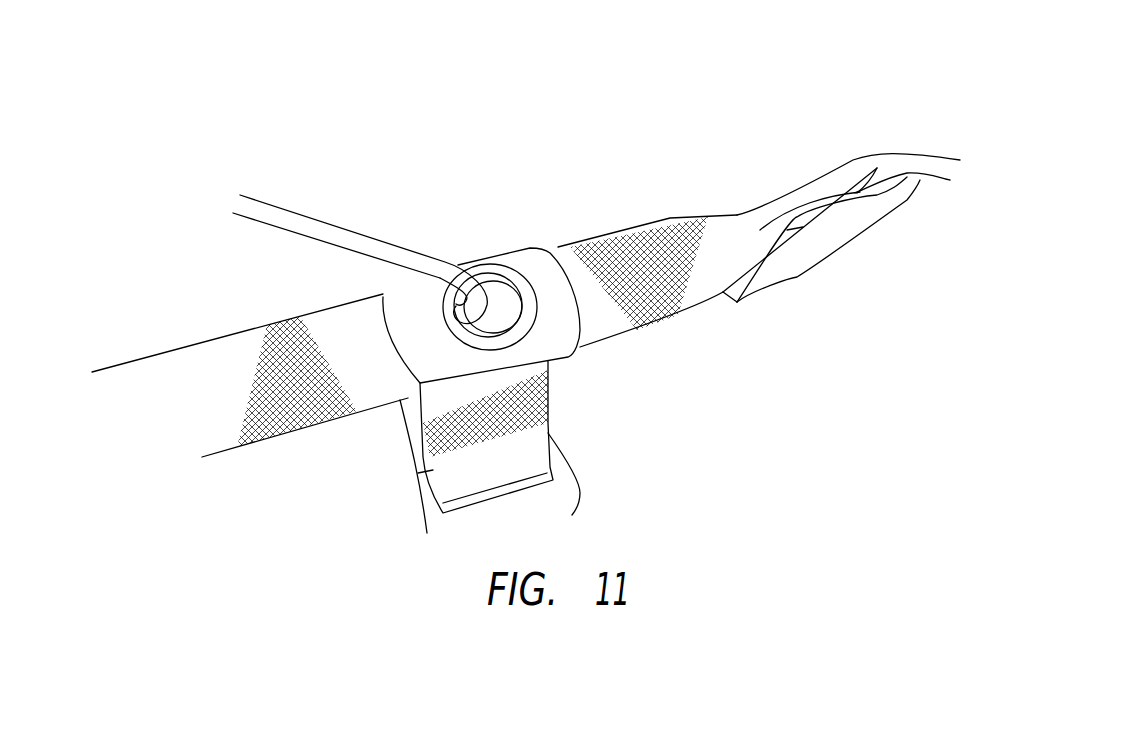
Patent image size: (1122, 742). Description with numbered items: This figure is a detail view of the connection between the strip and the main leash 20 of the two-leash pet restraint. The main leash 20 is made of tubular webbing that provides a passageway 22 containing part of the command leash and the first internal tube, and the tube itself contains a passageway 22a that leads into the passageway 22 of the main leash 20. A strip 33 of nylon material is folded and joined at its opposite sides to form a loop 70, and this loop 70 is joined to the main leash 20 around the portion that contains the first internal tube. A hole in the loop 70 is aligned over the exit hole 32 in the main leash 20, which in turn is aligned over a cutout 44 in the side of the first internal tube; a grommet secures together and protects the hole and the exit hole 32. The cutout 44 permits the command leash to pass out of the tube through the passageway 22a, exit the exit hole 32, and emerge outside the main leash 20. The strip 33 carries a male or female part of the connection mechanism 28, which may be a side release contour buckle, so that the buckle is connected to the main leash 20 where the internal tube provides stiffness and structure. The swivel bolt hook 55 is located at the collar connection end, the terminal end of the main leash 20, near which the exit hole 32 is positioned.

The main leash 20 is at (218, 357).
The passageway 22 is at (506, 254).
The passageway inside the first internal tube 22a is at (506, 308).
The connection mechanism 28 is at (548, 505).
The exit hole 32 is at (508, 305).
The strip 33 is at (472, 487).
The cutout 44 is at (497, 298).
The swivel bolt hook 55 is at (917, 172).
The loop 70 is at (437, 288).